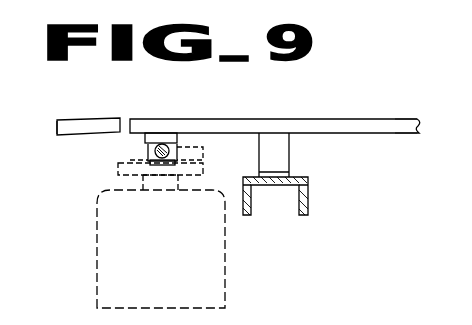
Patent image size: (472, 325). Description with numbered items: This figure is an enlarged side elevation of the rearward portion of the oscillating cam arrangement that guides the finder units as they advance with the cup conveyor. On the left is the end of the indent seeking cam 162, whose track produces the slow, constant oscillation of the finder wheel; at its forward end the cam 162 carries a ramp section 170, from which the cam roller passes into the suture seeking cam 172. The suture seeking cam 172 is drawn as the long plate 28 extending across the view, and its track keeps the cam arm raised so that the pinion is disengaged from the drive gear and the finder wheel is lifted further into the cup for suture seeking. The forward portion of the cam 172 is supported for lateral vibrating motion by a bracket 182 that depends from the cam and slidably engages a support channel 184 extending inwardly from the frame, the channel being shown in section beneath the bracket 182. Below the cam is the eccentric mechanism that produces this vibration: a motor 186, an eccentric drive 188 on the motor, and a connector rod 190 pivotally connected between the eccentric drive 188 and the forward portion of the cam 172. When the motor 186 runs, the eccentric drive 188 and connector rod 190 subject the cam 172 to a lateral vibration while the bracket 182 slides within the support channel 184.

The support plate 28 is at (253, 112).
The suture seeking cam 172 is at (418, 134).
The ramp section 170 is at (85, 121).
The indent seeking cam 162 is at (56, 127).
The connector rod 190 is at (149, 152).
The eccentric drive 188 is at (118, 172).
The motor 186 is at (97, 225).
The bracket 182 is at (287, 158).
The support channel 184 is at (309, 200).